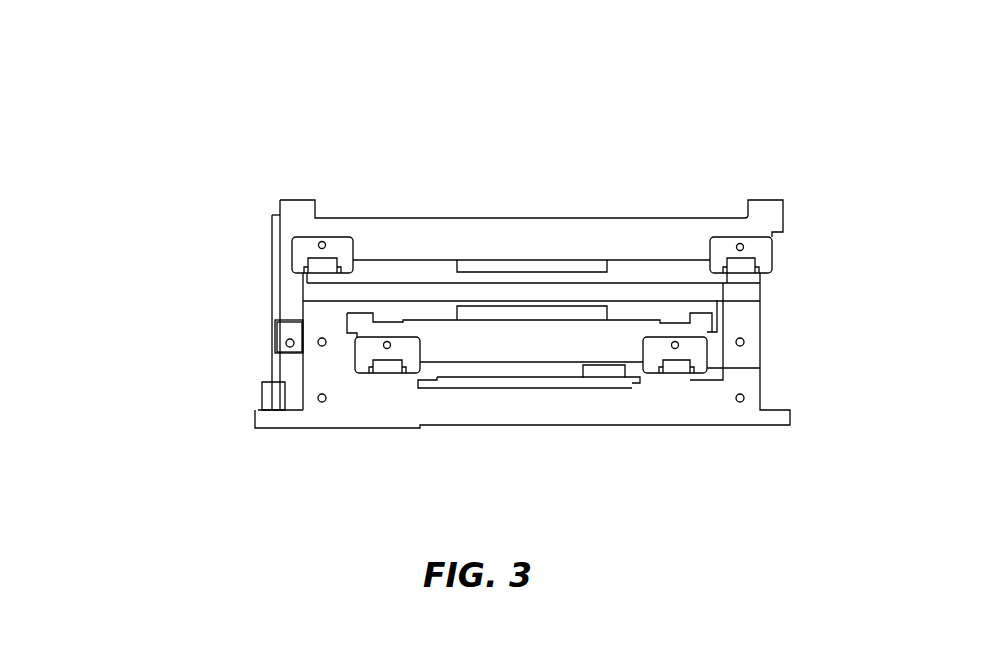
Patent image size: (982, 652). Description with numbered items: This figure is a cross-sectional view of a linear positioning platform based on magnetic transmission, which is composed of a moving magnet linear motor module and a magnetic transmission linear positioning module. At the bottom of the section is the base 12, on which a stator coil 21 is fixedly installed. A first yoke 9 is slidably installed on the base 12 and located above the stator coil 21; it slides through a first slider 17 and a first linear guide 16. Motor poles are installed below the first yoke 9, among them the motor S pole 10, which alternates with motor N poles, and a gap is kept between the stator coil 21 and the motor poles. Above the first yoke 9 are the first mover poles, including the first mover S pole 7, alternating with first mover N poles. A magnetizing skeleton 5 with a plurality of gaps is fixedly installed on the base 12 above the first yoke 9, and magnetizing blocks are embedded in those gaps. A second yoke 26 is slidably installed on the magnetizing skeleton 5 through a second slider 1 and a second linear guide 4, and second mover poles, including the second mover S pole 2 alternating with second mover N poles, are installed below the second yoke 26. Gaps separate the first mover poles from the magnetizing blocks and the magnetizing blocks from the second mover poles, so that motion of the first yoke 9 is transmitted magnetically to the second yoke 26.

The second yoke 26 is at (400, 232).
The second slider 1 is at (343, 253).
The second linear guide 4 is at (322, 270).
The magnetizing skeleton 5 is at (318, 293).
The base 12 is at (315, 382).
The second mover S pole 2 is at (578, 268).
The first mover S pole 7 is at (575, 312).
The first yoke 9 is at (695, 328).
The first slider 17 is at (693, 347).
The first linear guide 16 is at (675, 372).
The motor S pole 10 is at (625, 383).
The stator coil 21 is at (505, 385).